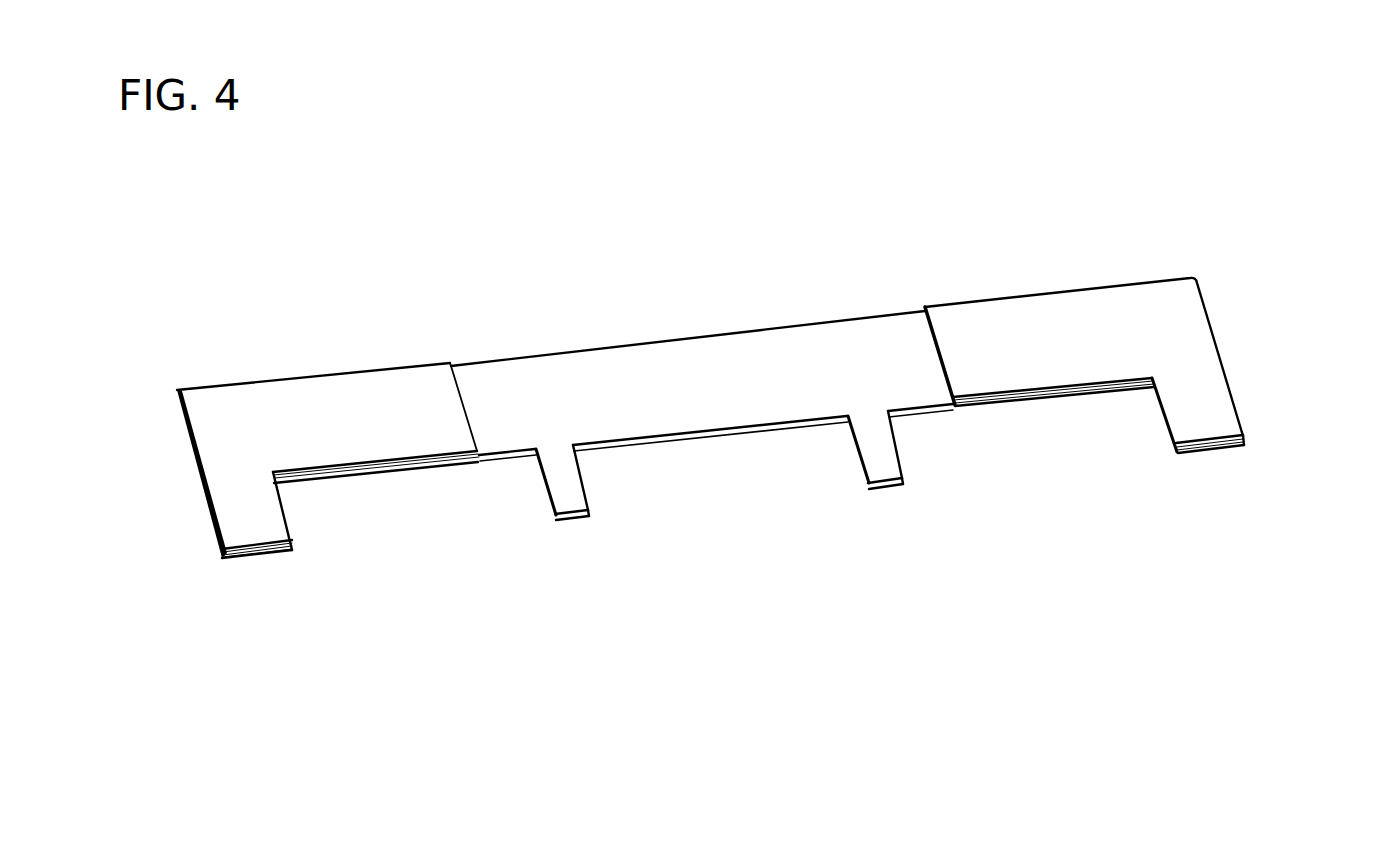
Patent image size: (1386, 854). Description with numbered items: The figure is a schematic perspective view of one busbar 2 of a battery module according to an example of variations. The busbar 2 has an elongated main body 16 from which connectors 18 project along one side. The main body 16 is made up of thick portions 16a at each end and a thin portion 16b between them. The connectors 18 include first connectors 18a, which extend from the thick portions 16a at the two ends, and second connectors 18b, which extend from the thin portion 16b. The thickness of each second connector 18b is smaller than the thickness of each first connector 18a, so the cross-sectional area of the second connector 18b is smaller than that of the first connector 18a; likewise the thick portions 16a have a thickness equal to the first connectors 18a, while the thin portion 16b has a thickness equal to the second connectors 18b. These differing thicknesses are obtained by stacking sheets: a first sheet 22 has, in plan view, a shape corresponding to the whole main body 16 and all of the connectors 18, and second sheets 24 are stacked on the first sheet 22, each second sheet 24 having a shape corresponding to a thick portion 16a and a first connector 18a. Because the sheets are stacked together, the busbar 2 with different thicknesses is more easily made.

The busbar 2 is at (723, 717).
The main body 16 is at (852, 312).
The thick portions 16a is at (992, 317).
The thin portion 16b is at (690, 360).
The connectors 18 is at (787, 493).
The first connector 18a is at (1203, 430).
The second connector 18b is at (888, 466).
The first sheet 22 is at (230, 565).
The second sheets 24 is at (225, 528).